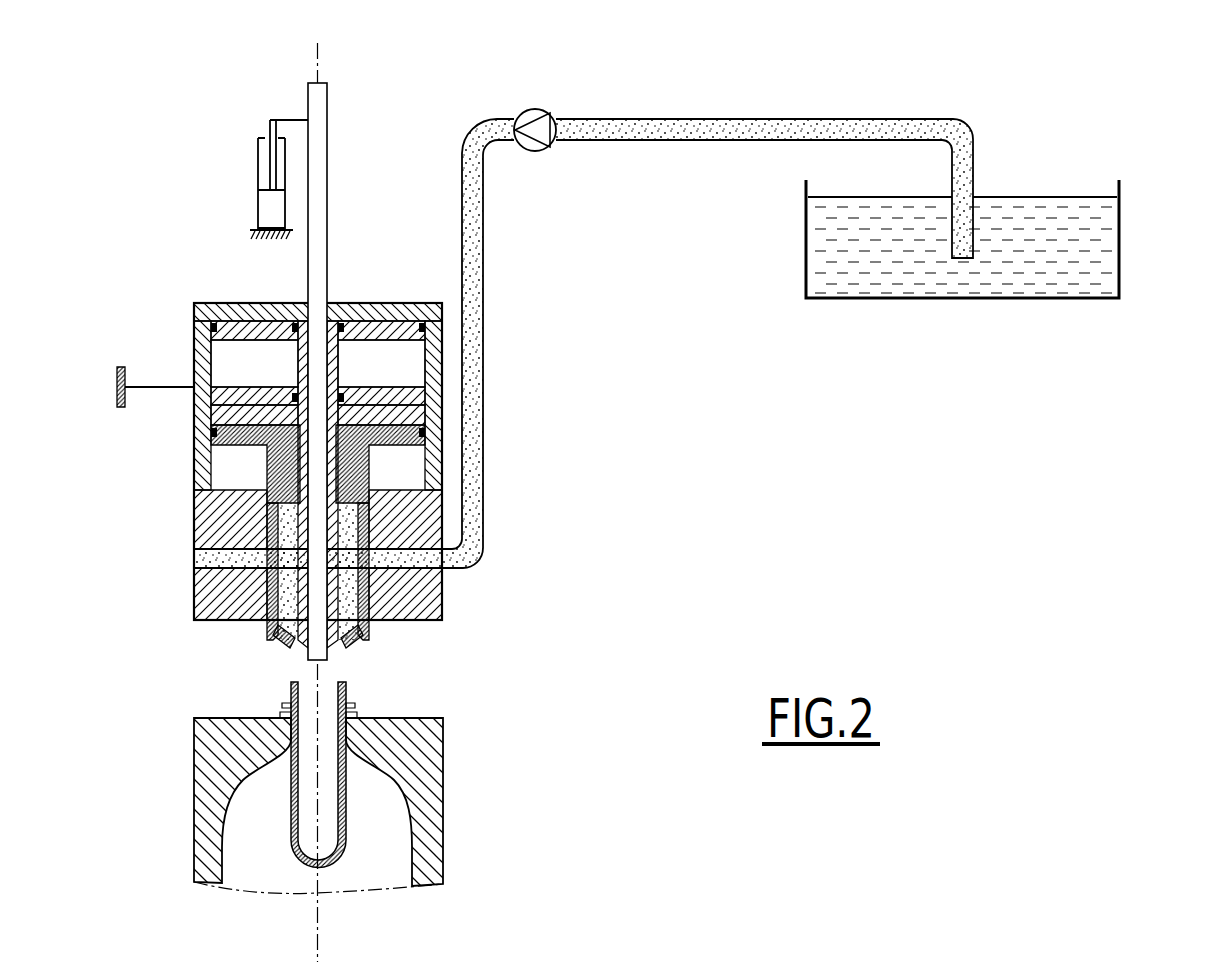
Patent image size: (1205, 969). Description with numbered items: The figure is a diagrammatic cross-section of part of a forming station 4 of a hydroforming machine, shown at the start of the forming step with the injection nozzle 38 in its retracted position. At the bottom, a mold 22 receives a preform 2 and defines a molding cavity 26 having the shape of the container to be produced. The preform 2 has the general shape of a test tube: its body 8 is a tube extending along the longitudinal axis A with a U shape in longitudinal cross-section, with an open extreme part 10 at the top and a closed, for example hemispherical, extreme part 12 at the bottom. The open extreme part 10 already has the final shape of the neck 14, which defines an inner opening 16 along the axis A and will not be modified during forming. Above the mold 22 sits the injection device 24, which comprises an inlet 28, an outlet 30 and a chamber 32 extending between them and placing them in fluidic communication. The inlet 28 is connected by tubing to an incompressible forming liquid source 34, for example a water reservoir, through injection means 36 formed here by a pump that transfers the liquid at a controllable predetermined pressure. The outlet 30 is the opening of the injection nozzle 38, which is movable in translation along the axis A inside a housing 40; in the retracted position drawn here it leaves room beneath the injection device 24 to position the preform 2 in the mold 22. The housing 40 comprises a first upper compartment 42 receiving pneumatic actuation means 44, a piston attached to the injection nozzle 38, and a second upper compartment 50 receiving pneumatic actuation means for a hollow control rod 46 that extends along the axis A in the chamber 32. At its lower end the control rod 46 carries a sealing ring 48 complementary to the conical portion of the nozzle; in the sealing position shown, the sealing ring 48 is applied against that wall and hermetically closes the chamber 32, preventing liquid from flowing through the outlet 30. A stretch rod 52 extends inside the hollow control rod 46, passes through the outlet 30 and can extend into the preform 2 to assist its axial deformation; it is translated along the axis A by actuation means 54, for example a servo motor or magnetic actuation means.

The preform 2 is at (279, 806).
The forming station 4 is at (520, 394).
The body 8 is at (343, 815).
The open extreme part 10 is at (327, 690).
The closed extreme part 12 is at (322, 868).
The neck 14 is at (290, 693).
The inner opening 16 is at (308, 692).
The mold 22 is at (213, 813).
The injection device 24 is at (203, 432).
The molding cavity 26 is at (265, 858).
The inlet 28 is at (413, 550).
The outlet 30 is at (332, 652).
The chamber 32 is at (345, 595).
The forming liquid source 34 is at (1078, 252).
The injection means 36 is at (537, 108).
The injection nozzle 38 is at (282, 642).
The housing 40 is at (203, 462).
The first upper compartment 42 is at (397, 468).
The actuation means 44 is at (395, 332).
The hollow control rod 46 is at (265, 481).
The sealing ring 48 is at (353, 632).
The second upper compartment 50 is at (230, 359).
The stretch rod 52 is at (323, 167).
The actuation means 54 is at (258, 170).
The longitudinal axis A is at (317, 925).